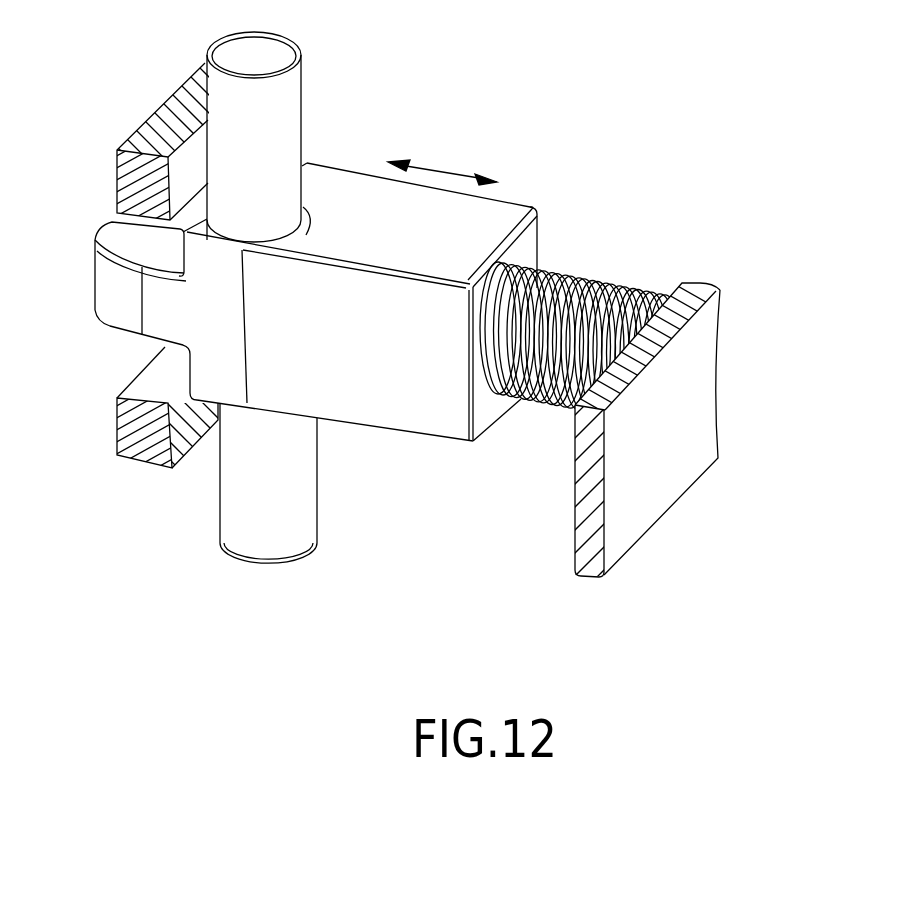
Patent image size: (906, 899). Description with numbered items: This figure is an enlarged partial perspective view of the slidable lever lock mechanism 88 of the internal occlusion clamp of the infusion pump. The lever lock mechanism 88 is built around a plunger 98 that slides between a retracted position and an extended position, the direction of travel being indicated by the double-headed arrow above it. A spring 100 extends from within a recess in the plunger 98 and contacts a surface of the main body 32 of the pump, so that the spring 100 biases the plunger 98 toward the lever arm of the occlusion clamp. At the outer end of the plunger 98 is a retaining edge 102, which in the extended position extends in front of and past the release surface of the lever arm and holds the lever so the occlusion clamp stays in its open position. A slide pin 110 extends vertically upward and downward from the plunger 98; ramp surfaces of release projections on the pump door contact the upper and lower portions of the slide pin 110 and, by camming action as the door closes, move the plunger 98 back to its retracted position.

The main body 32 is at (690, 430).
The lever lock mechanism 88 is at (353, 452).
The plunger 98 is at (425, 432).
The spring 100 is at (630, 283).
The retaining edge 102 is at (117, 230).
The slide pin 110 is at (302, 103).